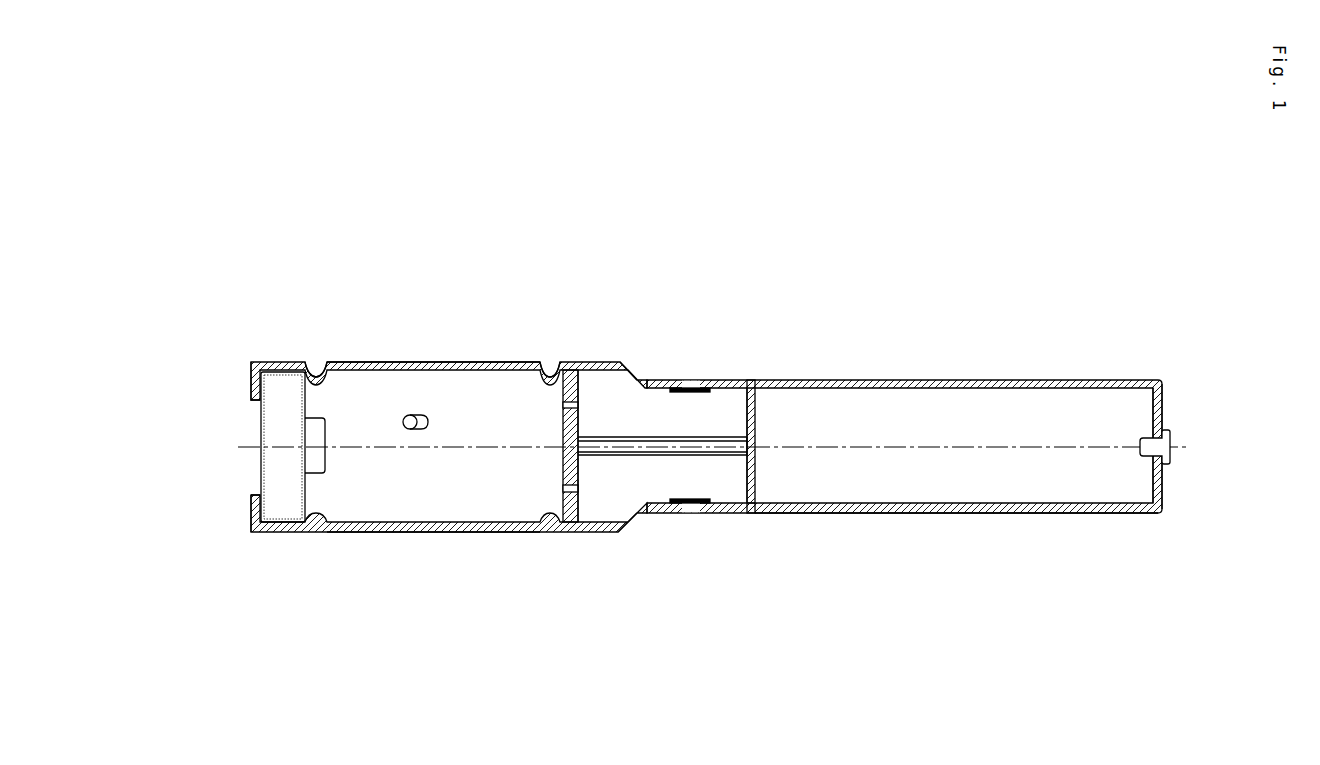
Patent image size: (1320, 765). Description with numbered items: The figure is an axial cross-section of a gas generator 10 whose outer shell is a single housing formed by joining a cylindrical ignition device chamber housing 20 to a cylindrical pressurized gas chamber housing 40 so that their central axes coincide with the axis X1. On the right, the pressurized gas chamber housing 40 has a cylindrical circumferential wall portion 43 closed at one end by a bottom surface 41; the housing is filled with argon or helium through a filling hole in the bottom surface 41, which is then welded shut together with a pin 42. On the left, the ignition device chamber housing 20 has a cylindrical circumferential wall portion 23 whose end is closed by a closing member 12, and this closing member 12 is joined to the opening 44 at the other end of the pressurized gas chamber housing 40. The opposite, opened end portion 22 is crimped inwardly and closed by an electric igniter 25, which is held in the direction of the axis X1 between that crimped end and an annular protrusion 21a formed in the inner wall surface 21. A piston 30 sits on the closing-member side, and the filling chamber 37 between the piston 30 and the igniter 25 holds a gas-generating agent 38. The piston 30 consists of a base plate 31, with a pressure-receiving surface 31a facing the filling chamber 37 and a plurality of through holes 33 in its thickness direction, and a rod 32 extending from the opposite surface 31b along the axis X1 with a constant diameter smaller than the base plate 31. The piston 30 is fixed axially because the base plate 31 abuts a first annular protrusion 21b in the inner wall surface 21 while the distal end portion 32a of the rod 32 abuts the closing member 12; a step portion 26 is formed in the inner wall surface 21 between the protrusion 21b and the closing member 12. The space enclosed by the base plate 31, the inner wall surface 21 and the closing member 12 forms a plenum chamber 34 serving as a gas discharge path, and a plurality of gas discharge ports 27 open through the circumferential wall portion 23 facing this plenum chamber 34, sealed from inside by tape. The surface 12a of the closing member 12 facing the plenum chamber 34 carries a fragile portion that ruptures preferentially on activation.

The gas generator 10 is at (841, 352).
The closing member 12 is at (757, 424).
The surface of closing member 12a is at (746, 417).
The ignition device chamber housing 20 is at (393, 363).
The inner wall surface 21 is at (476, 370).
The annular protrusion 21a is at (316, 362).
The annular protrusion (first protrusion) 21b is at (551, 362).
The opened end portion 22 is at (249, 378).
The cylindrical circumferential wall portion 23 is at (400, 532).
The electric igniter 25 is at (270, 430).
The step portion (second protrusion) 26 is at (630, 368).
The gas discharge ports 27 is at (690, 386).
The piston 30 is at (612, 585).
The base plate 31 is at (568, 533).
The pressure-receiving surface 31a is at (564, 488).
The surface on the other side 31b is at (584, 421).
The rod 32 is at (604, 457).
The distal end portion 32a is at (750, 452).
The through holes 33 is at (564, 404).
The plenum chamber 34 is at (637, 486).
The filling chamber 37 is at (364, 490).
The gas-generating agent 38 is at (420, 416).
The pressurized gas chamber housing 40 is at (976, 380).
The bottom surface 41 is at (1160, 405).
The pin 42 is at (1169, 459).
The cylindrical circumferential wall portion 43 is at (950, 514).
The opening 44 is at (748, 514).
The axis X1 is at (726, 447).